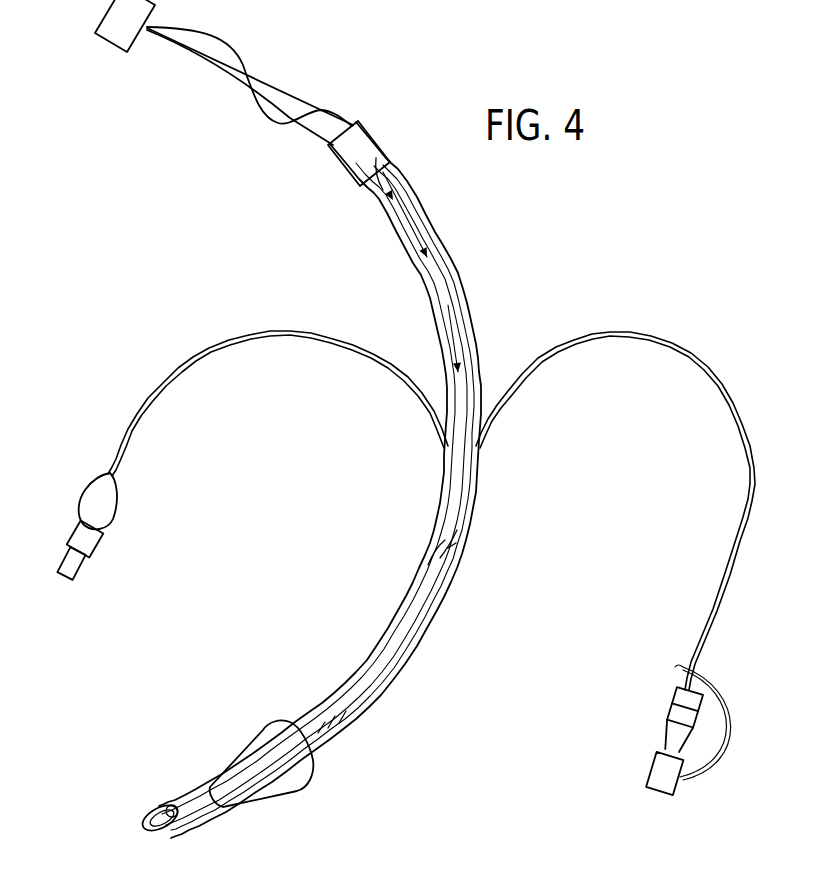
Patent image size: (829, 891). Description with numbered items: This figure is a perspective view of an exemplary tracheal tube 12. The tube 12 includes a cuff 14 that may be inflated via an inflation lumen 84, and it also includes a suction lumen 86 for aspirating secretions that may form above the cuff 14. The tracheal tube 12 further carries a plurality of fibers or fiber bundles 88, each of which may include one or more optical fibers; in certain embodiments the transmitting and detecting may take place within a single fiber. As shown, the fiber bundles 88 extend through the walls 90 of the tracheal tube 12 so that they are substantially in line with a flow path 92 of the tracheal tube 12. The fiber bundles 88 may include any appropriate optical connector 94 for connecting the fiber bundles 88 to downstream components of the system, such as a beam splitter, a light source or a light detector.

The tracheal tube 12 is at (126, 256).
The cuff 14 is at (280, 722).
The inflation lumen 84 is at (122, 440).
The suction lumen 86 is at (651, 337).
The fiber bundles 88 is at (268, 124).
The walls 90 is at (428, 291).
The flow path 92 is at (453, 327).
The optical connector 94 is at (110, 48).